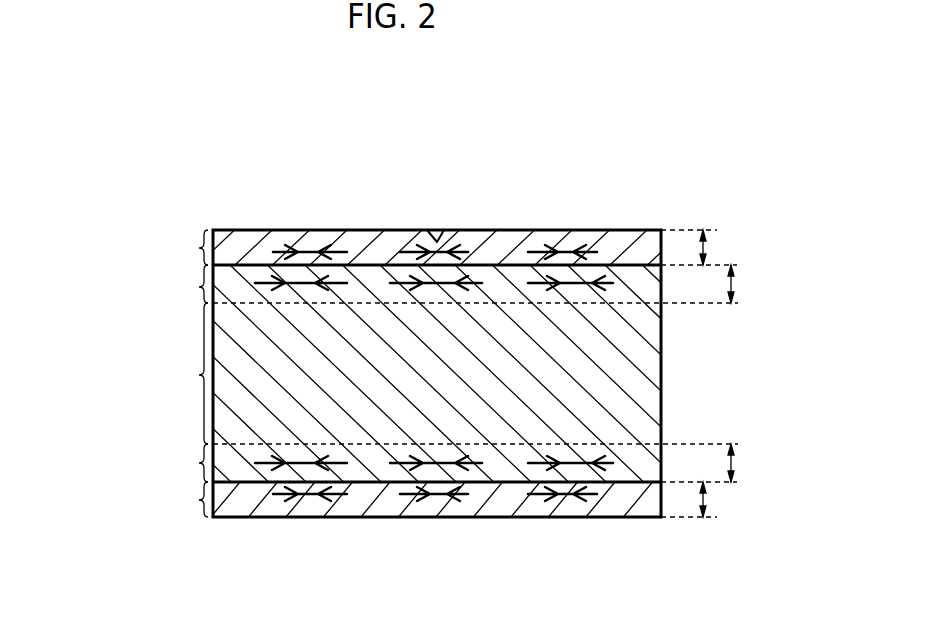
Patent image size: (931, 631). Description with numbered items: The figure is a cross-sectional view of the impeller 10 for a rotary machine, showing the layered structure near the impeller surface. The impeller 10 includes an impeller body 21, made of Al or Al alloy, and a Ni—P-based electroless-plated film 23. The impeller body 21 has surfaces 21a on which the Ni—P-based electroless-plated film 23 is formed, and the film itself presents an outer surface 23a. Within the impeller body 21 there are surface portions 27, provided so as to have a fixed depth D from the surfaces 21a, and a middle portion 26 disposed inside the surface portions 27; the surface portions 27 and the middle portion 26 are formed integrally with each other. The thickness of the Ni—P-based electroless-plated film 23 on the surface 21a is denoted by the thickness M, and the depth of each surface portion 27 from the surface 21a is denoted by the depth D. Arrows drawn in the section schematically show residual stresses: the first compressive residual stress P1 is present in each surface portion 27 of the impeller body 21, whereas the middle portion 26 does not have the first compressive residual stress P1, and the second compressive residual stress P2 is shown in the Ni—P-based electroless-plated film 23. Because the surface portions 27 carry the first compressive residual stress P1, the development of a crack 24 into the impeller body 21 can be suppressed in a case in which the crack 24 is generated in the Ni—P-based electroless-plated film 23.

The impeller for rotary machine 10 is at (70, 160).
The impeller body 21 is at (106, 312).
The surface 21a is at (510, 268).
The Ni—P-based electroless-plated film 23 is at (199, 248).
The surface 23a is at (302, 229).
The crack 24 is at (437, 242).
The middle portion 26 is at (199, 375).
The surface portion 27 is at (199, 287).
The first compressive residual stress P1 is at (577, 283).
The second compressive residual stress P2 is at (577, 257).
The thickness M is at (707, 247).
The depth D is at (735, 285).